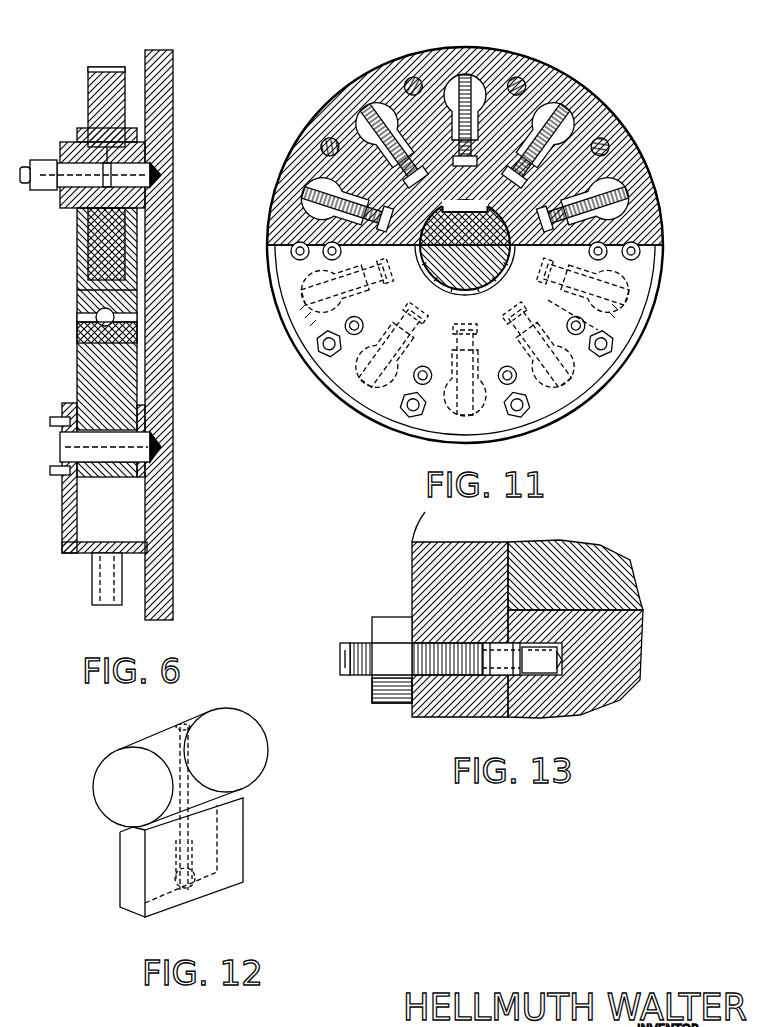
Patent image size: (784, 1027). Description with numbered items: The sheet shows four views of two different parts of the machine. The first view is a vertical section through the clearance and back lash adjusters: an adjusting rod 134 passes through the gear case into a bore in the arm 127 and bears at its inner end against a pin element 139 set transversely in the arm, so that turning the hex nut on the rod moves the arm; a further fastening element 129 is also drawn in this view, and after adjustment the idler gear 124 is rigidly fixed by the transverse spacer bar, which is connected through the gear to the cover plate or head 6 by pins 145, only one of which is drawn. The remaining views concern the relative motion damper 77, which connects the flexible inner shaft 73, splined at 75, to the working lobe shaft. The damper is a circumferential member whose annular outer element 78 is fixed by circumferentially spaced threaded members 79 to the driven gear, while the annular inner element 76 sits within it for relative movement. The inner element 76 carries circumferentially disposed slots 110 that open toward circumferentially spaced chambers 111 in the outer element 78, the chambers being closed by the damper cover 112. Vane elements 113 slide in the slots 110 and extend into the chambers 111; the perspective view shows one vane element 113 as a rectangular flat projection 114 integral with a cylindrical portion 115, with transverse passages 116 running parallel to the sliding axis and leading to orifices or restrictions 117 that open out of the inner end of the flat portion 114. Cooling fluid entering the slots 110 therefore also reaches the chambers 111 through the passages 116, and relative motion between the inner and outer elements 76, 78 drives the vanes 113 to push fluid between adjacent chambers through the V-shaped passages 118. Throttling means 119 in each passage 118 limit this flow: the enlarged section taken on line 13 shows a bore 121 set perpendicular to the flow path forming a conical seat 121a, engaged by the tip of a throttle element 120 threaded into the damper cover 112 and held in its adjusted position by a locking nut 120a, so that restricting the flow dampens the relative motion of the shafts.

In FIG. 6, the cover plate or head 6 is at (165, 389).
In FIG. 11, the section line 13— 13 is at (562, 308).
In FIG. 11, the inner shaft 73 is at (500, 270).
In FIG. 11, the spline 75 is at (458, 200).
In FIG. 11, the inner element 76 is at (352, 252).
In FIG. 11, the relative motion damper 77 is at (272, 297).
In FIG. 11, the outer annular element 78 is at (290, 233).
In FIG. 11, the threaded members 79 is at (410, 78).
In FIG. 11, the slots 110 is at (430, 250).
In FIG. 11, the chambers 111 is at (405, 95).
In FIG. 11, the damper cover 112 is at (612, 365).
In FIG. 11, the vane elements 113 is at (375, 110).
In FIG. 12, the vane elements 113 is at (136, 860).
In FIG. 12, the rectangular flat projection 114 is at (236, 839).
In FIG. 12, the cylindrical portion 115 is at (258, 757).
In FIG. 11, the transverse passages 116 is at (396, 140).
In FIG. 12, the transverse passages 116 is at (172, 735).
In FIG. 11, the orifices or restrictions 117 is at (406, 152).
In FIG. 12, the orifices or restrictions 117 is at (196, 884).
In FIG. 11, the V-shaped passages 118 is at (437, 62).
In FIG. 13, the V-shaped passages 118 is at (518, 678).
In FIG. 11, the throttling means 119 is at (345, 327).
In FIG. 13, the throttling means 119 is at (345, 650).
In FIG. 11, the throttle element 120 is at (421, 392).
In FIG. 13, the throttle element 120 is at (495, 645).
In FIG. 11, the locking nuts 120a is at (364, 328).
In FIG. 13, the locking nuts 120a is at (395, 632).
In FIG. 13, the bores 121 is at (548, 660).
In FIG. 13, the conical shaped seats 121a is at (540, 655).
In FIG. 6, the idler gear 124 is at (95, 97).
In FIG. 6, the arm 127 is at (88, 393).
In FIG. 6, the bolt 129 is at (112, 452).
In FIG. 6, the adjusting rod 134 is at (96, 312).
In FIG. 6, the pin element 139 is at (78, 332).
In FIG. 6, the pins 145 is at (152, 173).